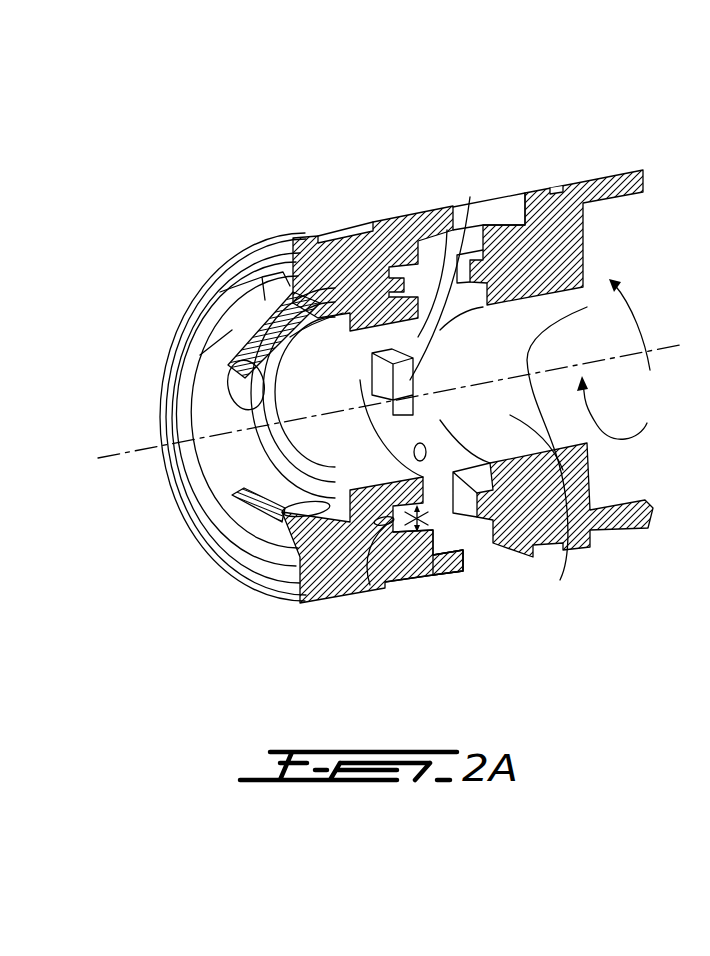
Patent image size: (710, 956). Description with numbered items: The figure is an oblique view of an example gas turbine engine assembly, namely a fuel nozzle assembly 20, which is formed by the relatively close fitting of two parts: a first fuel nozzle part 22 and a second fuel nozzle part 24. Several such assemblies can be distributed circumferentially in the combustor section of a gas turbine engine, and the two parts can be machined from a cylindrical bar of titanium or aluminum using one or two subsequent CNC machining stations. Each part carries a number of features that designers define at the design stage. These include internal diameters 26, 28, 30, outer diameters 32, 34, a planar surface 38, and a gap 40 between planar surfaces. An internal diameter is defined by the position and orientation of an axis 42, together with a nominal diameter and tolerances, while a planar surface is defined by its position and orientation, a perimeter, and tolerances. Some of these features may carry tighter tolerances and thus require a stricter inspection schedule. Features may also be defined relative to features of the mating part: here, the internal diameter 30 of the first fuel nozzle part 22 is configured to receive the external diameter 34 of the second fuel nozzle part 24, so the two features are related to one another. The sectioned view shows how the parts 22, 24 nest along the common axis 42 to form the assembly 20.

The fuel nozzle assembly 20 is at (220, 197).
The first fuel nozzle part 22 is at (304, 226).
The second fuel nozzle part 24 is at (566, 176).
The internal diameter 26 is at (333, 435).
The internal diameter 28 is at (557, 547).
The internal diameter 30 is at (432, 578).
The outer diameter 32 is at (460, 577).
The outer diameter 34 is at (507, 540).
The planar surface 38 is at (447, 230).
The gap 40 is at (388, 530).
The axis 42 is at (662, 345).